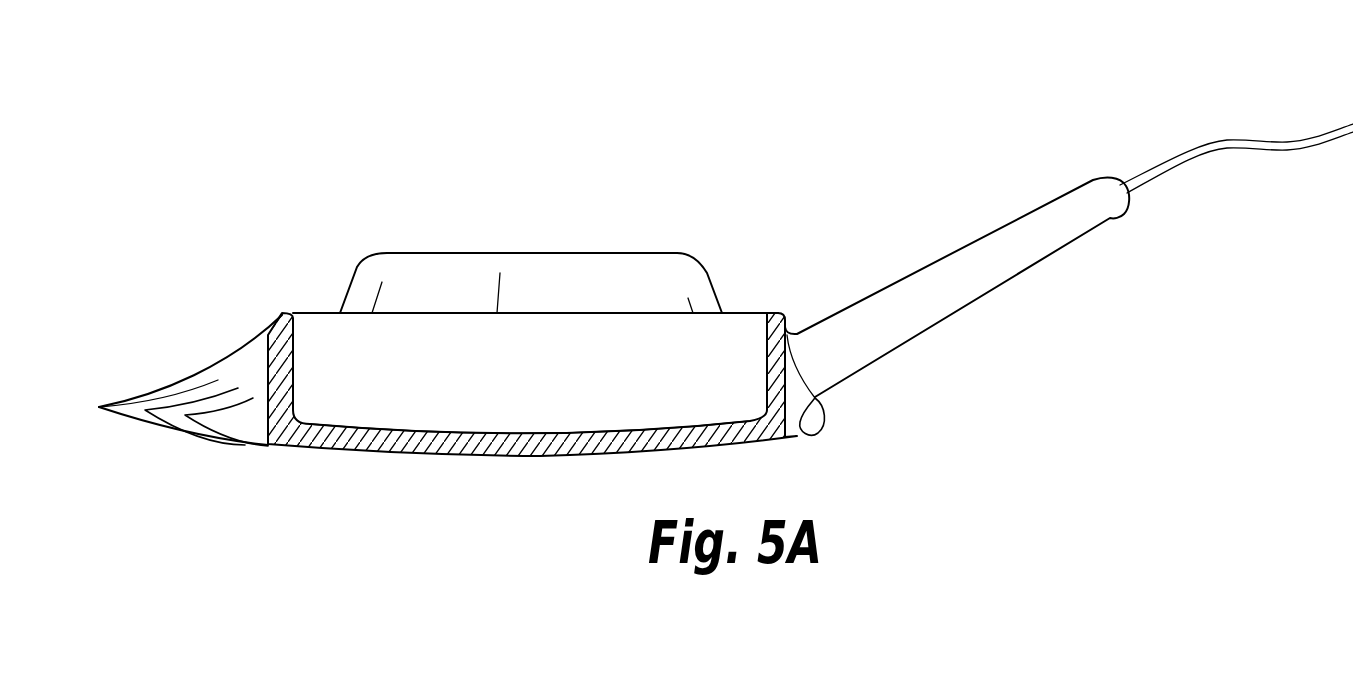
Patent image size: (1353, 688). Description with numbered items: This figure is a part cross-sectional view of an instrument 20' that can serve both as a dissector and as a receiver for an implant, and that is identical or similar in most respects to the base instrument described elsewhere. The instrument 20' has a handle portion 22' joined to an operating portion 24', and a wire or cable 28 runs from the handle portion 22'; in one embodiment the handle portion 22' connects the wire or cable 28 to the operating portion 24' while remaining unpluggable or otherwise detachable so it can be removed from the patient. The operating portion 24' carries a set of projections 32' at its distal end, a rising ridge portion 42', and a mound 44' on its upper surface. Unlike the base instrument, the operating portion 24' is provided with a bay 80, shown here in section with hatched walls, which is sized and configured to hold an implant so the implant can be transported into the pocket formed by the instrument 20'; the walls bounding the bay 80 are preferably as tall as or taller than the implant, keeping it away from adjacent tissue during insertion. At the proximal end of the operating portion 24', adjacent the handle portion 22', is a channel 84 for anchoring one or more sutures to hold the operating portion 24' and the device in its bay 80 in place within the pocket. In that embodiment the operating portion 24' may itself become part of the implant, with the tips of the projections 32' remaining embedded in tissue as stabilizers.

The instrument 20' is at (724, 295).
The handle portion 22' is at (957, 287).
The operating portion 24' is at (541, 296).
The wire or cable 28 is at (1222, 140).
The set of projections 32' is at (181, 470).
The rising ridge portion 42' is at (190, 353).
The mound 44' is at (531, 239).
The bay 80 is at (477, 413).
The channel 84 is at (818, 400).